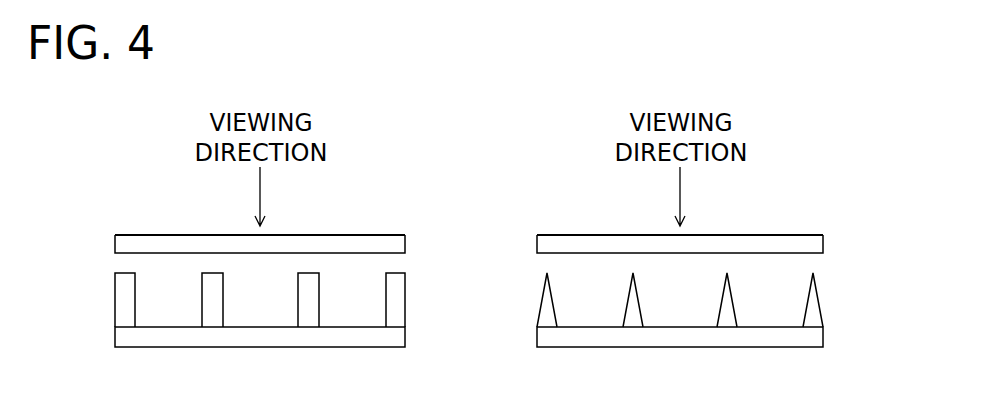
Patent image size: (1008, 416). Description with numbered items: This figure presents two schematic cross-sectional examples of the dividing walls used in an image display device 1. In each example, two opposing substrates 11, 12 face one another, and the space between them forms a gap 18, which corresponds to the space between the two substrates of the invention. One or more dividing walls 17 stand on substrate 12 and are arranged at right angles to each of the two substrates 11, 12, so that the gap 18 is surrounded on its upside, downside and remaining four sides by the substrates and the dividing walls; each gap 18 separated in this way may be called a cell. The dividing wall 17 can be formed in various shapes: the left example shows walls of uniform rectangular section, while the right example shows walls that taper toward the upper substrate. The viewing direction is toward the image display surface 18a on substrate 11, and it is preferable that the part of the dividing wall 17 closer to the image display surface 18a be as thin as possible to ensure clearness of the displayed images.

The image display device 1 is at (402, 196).
The substrate 11 is at (115, 244).
The substrate 12 is at (120, 337).
The dividing wall 17 is at (120, 300).
The gap 18 is at (170, 308).
The image display surface 18a is at (165, 235).